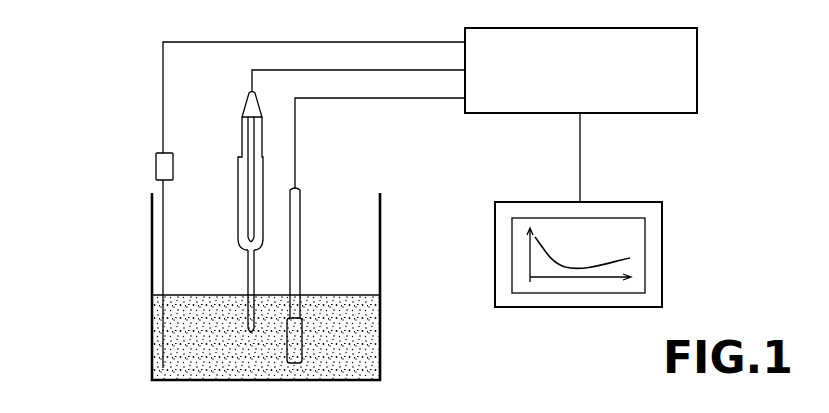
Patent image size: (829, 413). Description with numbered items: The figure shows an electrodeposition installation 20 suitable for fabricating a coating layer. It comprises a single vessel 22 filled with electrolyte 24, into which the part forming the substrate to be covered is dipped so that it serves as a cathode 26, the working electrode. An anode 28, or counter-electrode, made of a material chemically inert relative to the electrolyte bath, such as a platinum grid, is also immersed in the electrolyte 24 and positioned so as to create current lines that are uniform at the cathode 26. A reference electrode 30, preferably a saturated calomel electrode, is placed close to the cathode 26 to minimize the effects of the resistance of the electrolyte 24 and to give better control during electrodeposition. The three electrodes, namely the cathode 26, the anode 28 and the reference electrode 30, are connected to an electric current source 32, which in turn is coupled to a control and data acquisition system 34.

The electrodeposition installation 20 is at (118, 210).
The vessel 22 is at (387, 195).
The electrolyte 24 is at (333, 315).
The cathode 26 is at (312, 343).
The anode 28 is at (153, 323).
The reference electrode 30 is at (237, 158).
The electric current source 32 is at (575, 81).
The control and data acquisition system 34 is at (572, 307).